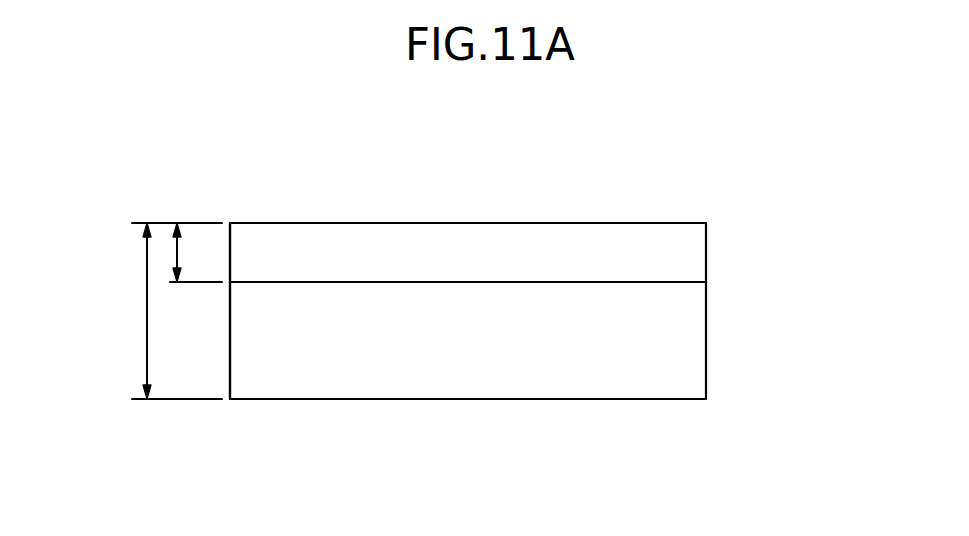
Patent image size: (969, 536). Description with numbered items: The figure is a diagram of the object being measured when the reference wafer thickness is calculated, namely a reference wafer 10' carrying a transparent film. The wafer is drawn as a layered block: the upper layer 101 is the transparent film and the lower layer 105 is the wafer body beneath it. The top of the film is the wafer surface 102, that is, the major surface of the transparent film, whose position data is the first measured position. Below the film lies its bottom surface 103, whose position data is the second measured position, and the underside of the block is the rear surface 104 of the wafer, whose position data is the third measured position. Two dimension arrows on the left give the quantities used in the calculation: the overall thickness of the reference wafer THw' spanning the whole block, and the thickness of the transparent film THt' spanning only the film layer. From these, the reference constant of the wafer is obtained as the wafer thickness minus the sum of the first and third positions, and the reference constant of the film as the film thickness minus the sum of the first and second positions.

The wafer surface 102 is at (680, 223).
The first layer 101 is at (680, 265).
The bottom surface 103 is at (680, 283).
The second layer 105 is at (678, 378).
The second surface (X3') 104 is at (680, 400).
The reference wafer 10' is at (207, 357).
The thickness of the transparent film THt' is at (181, 199).
The thickness of the reference wafer THw' is at (85, 311).